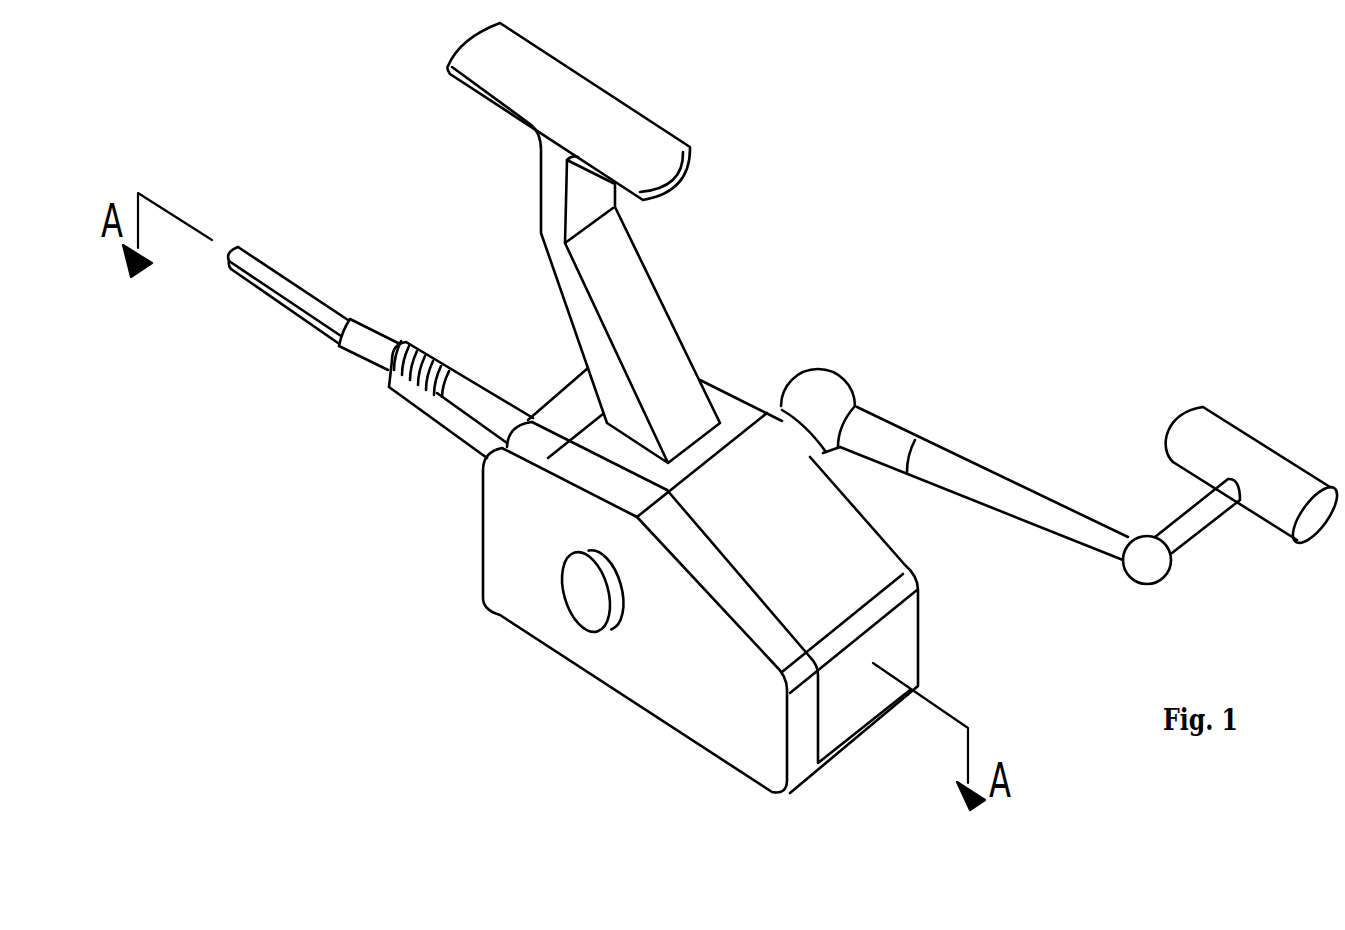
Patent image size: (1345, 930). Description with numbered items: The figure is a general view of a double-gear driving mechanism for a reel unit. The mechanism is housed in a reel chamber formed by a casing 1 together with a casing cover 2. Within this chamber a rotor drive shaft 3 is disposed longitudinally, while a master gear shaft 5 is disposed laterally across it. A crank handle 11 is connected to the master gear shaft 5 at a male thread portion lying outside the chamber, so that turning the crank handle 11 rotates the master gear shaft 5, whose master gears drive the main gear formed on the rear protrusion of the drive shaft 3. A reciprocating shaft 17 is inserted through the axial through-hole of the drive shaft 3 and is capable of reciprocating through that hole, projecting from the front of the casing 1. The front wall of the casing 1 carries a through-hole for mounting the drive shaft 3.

The casing 1 is at (843, 557).
The casing cover 2 is at (681, 698).
The rotor drive shaft 3 is at (418, 346).
The master gear shaft 5 is at (778, 404).
The crank handle 11 is at (887, 433).
The reciprocating shaft 17 is at (280, 282).